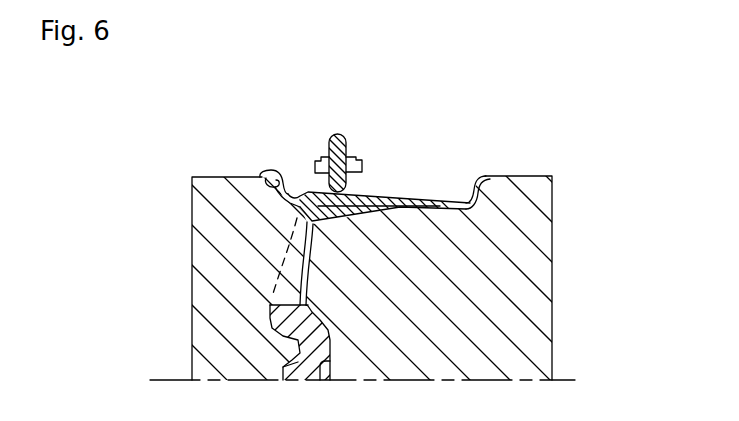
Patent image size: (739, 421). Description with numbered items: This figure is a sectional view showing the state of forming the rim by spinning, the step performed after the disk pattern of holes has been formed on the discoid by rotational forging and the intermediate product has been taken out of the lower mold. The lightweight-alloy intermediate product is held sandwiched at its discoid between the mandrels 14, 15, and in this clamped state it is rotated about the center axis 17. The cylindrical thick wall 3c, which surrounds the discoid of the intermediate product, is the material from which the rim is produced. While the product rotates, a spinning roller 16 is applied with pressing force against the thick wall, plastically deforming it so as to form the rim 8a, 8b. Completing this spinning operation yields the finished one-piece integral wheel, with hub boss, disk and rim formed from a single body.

The cylindrical thick wall 3c is at (308, 197).
The rim 8a is at (262, 176).
The rim 8b is at (442, 203).
The mandrel 14 is at (217, 237).
The mandrel 15 is at (540, 237).
The spinning roller 16 is at (340, 137).
The center axis 17 is at (178, 380).